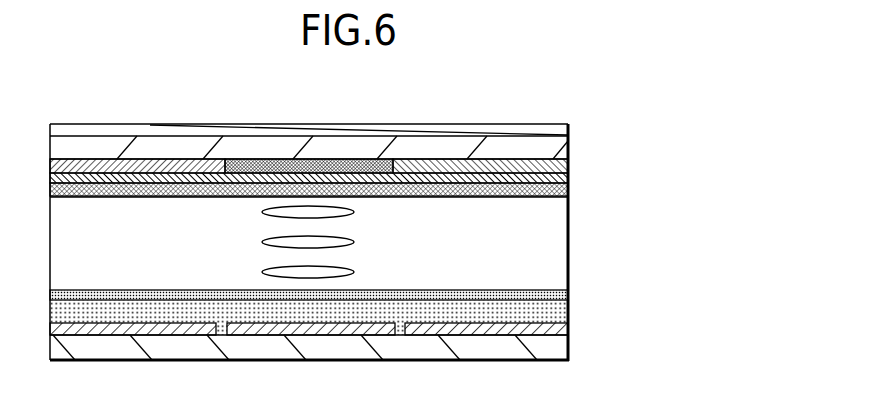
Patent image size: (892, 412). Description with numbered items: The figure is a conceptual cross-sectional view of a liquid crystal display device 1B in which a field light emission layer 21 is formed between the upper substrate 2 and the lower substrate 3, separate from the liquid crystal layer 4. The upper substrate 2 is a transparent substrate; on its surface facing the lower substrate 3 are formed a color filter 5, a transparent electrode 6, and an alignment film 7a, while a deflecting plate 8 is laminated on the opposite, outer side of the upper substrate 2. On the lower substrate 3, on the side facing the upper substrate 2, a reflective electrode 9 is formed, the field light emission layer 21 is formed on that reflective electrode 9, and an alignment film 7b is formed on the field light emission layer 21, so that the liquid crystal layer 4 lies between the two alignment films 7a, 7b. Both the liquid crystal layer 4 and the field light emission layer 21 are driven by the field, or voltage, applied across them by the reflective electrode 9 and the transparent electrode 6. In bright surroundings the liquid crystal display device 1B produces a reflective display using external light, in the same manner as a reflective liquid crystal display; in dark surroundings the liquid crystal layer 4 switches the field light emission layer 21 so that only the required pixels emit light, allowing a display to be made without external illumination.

The deflecting plate 8 is at (568, 124).
The upper substrate 2 is at (568, 142).
The color filter 5 is at (568, 165).
The transparent electrode 6 is at (568, 187).
The alignment film 7a is at (568, 200).
The liquid crystal layer 4 is at (563, 267).
The alignment film 7b is at (568, 295).
The field light emission layer 21 is at (568, 310).
The reflective electrode 9 is at (568, 333).
The lower substrate 3 is at (565, 348).
The liquid crystal display device 1B is at (768, 335).